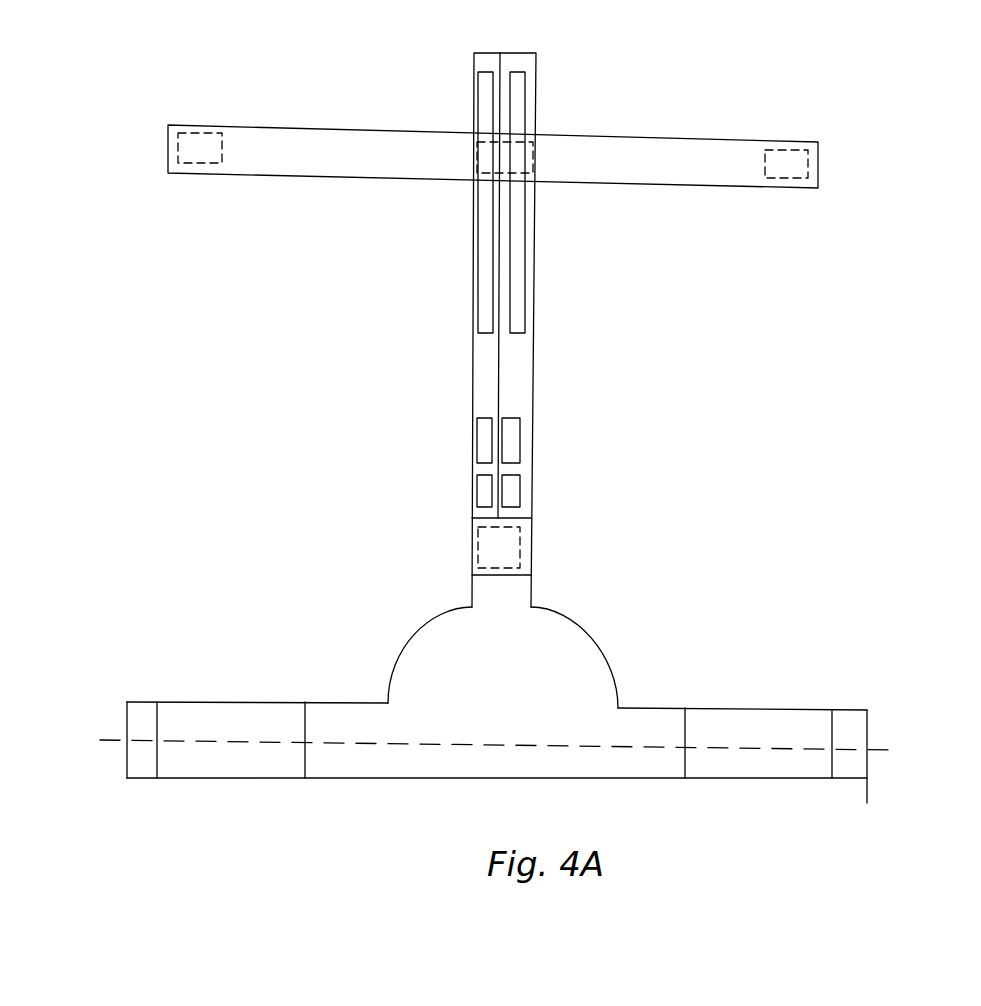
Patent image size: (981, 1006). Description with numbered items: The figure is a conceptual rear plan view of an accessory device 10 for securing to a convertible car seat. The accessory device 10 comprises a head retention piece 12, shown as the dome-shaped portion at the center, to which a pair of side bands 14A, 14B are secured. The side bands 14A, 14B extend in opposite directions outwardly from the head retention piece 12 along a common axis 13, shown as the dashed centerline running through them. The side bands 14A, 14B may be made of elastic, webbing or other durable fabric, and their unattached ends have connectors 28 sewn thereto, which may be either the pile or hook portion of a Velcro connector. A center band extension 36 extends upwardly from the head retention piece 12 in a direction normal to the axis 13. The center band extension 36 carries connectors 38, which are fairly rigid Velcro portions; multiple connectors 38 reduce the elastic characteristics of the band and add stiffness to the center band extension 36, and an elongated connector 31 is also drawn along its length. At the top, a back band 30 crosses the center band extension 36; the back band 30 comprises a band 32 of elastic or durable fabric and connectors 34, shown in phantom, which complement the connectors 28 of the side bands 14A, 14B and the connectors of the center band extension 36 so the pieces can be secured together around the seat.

The accessory device 10 is at (459, 458).
The head retention piece 12 is at (582, 650).
The common axis 13 is at (107, 738).
The side band 14A is at (207, 713).
The side band 14B is at (745, 718).
The connector 28 is at (137, 769).
The back band 30 is at (497, 326).
The band 32 is at (650, 141).
The connector 34 is at (185, 157).
The center band extension 36 is at (519, 330).
The elongated slot 31 is at (485, 313).
The connector 38 is at (478, 440).